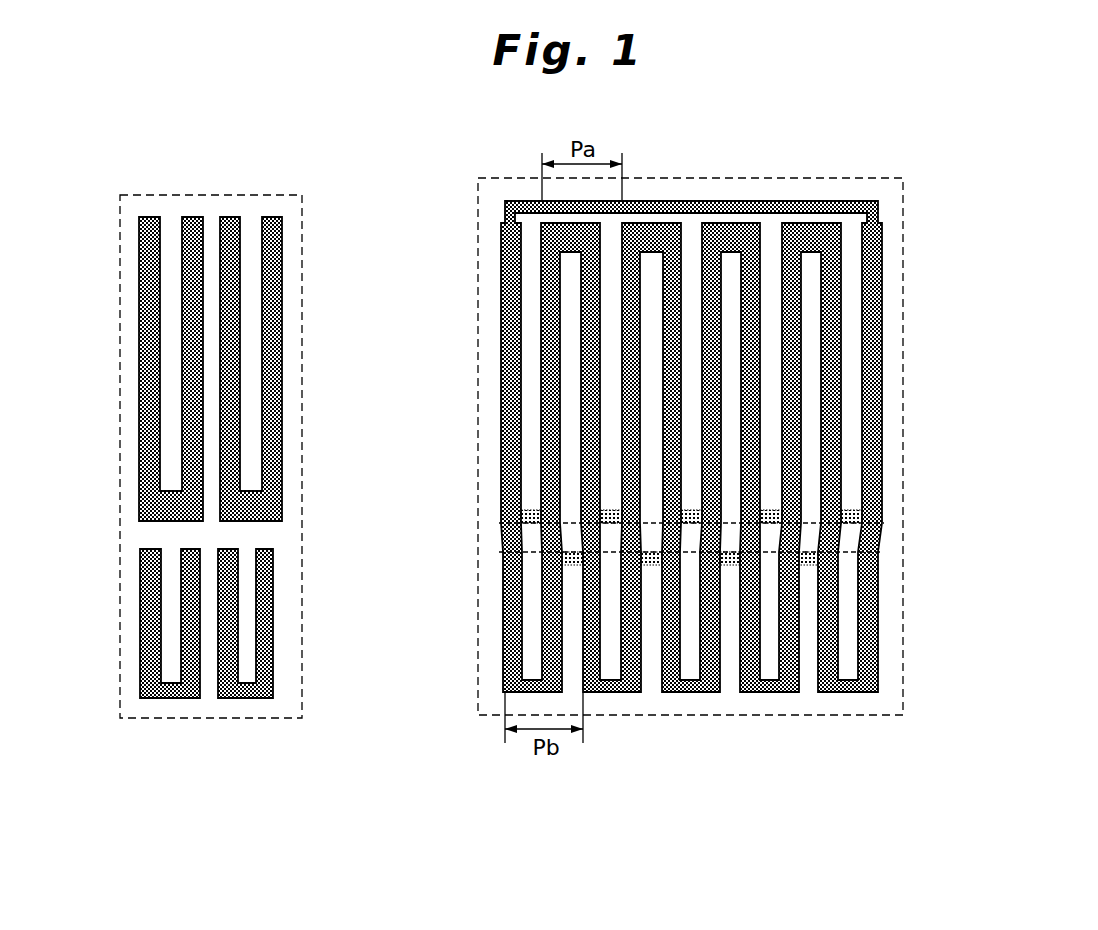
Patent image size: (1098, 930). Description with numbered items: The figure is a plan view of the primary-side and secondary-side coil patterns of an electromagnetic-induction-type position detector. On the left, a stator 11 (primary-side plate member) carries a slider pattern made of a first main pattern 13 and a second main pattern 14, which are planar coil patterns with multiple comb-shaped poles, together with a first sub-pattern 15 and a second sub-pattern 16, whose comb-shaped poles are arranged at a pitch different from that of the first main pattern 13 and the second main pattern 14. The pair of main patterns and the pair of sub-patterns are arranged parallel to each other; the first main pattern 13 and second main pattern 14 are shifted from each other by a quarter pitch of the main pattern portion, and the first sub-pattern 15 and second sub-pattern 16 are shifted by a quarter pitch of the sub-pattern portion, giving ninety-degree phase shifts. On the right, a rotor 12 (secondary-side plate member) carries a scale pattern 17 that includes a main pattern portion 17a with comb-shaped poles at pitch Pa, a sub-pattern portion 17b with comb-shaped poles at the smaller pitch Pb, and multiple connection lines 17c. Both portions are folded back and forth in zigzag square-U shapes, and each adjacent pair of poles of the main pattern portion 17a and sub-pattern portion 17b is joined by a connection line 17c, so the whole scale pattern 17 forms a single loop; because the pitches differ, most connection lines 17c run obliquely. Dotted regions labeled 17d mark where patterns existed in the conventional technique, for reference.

The stator 11 is at (175, 718).
The rotor 12 is at (695, 716).
The first main pattern 13 is at (140, 350).
The second main pattern 14 is at (282, 347).
The first sub-pattern 15 is at (141, 605).
The second sub-pattern 16 is at (273, 605).
The scale pattern 17 is at (746, 446).
The main pattern portion 17a is at (897, 401).
The sub-pattern portion 17b is at (893, 610).
The connection lines 17c is at (870, 538).
The portions where patterns exist in the conventional technique 17d is at (527, 516).